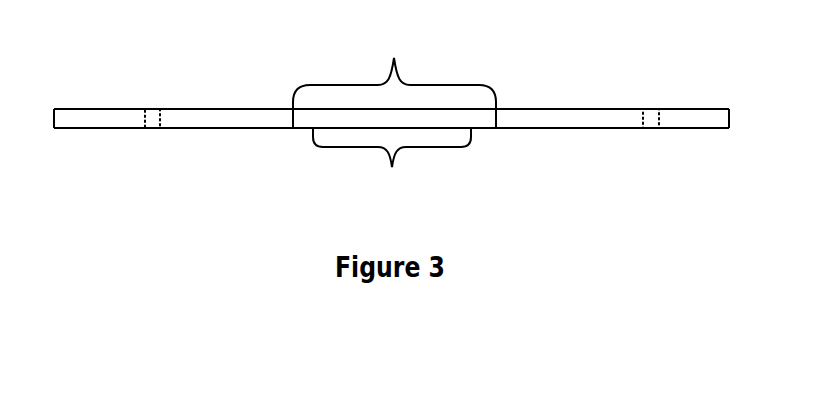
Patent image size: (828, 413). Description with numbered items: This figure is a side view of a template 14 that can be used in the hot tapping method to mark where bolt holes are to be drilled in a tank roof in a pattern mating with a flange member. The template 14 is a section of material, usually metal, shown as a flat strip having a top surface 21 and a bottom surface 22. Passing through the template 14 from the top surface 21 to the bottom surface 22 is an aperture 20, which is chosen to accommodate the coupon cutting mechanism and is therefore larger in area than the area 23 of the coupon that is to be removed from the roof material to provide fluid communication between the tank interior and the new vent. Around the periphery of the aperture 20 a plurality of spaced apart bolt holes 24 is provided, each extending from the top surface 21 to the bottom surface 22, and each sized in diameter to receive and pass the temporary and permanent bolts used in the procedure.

The template 14 is at (634, 97).
The aperture 20 is at (394, 81).
The top surface 21 is at (203, 109).
The bottom surface 22 is at (183, 129).
The area of the coupon 23 is at (392, 164).
The bolt holes 24 is at (153, 109).